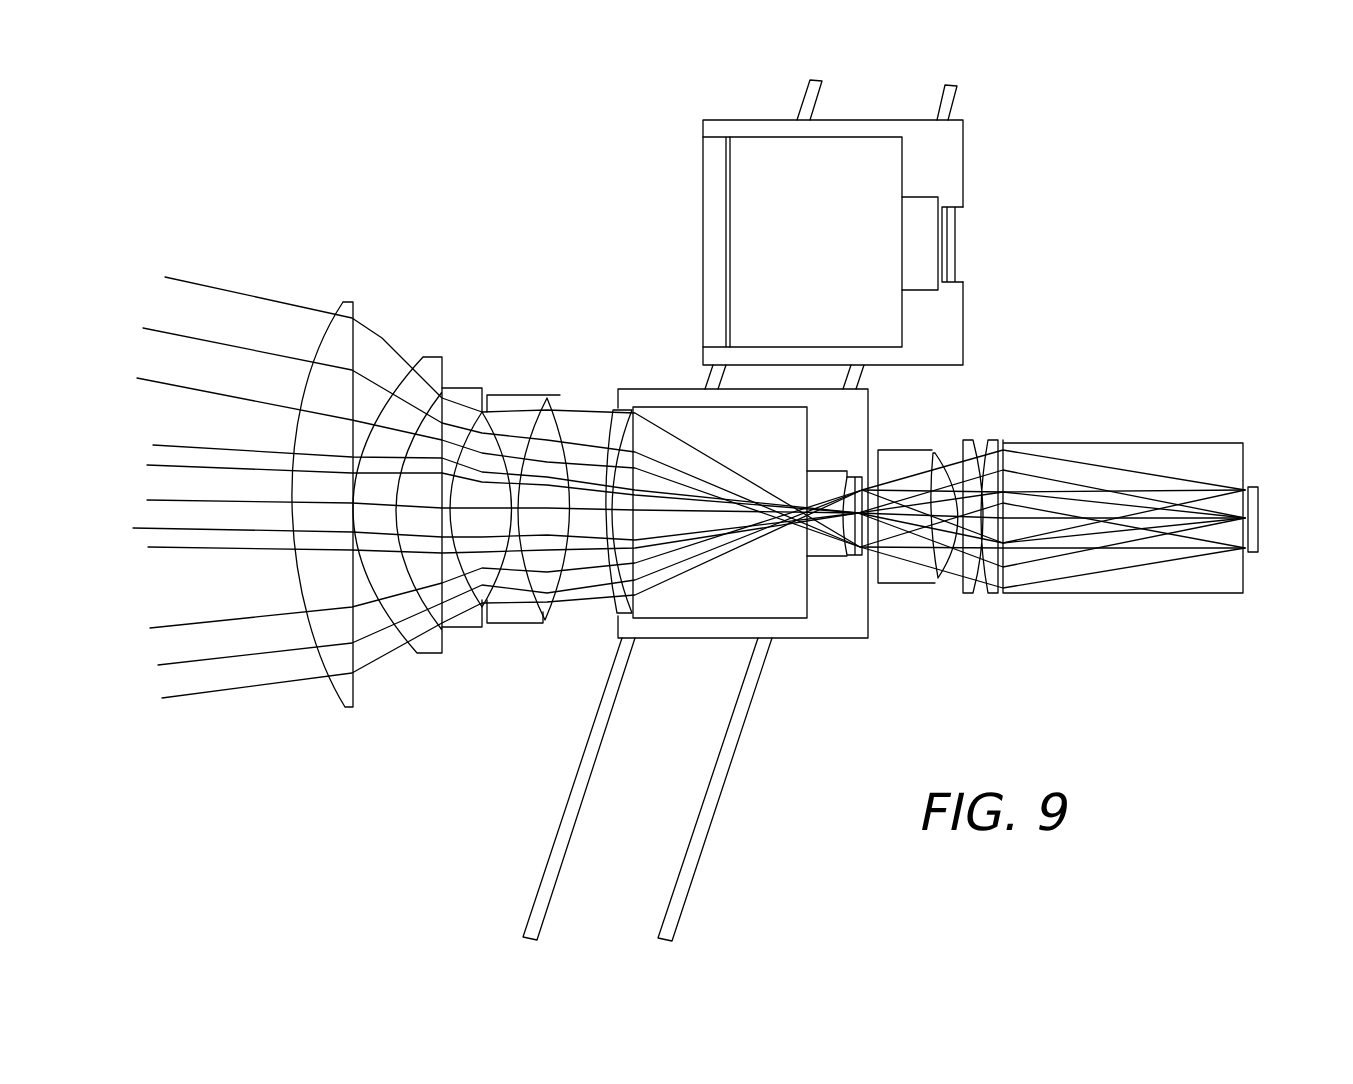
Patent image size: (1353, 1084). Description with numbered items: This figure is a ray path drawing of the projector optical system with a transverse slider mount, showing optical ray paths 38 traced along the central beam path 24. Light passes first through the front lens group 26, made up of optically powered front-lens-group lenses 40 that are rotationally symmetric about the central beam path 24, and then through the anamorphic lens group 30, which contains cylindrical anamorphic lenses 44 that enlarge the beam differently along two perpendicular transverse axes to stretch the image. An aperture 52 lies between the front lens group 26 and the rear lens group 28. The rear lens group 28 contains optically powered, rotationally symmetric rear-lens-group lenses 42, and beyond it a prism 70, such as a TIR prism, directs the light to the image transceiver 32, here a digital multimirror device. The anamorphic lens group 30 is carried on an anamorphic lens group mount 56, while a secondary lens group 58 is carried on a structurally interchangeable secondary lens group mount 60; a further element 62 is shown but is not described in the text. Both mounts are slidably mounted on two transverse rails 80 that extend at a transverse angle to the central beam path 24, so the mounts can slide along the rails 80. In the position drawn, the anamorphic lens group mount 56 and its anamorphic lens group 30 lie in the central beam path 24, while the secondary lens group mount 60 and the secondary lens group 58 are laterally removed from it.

The central beam path 24 is at (162, 492).
The optical ray paths 38 is at (205, 341).
The front lens group 26 is at (440, 503).
The front-lens-group lenses 40 is at (355, 690).
The anamorphic lenses 44 is at (612, 427).
The anamorphic lens group mount 56 is at (712, 638).
The anamorphic lens group 30 is at (723, 535).
The aperture 52 is at (873, 475).
The secondary lens group 58 is at (831, 229).
The secondary lens group mount 60 is at (875, 118).
The window 62 is at (712, 162).
The rear lens group 28 is at (951, 519).
The rear-lens-group lenses 42 is at (919, 578).
The prism 70 is at (1137, 594).
The image transceiver 32 is at (1258, 517).
The transverse rail 80 is at (697, 837).